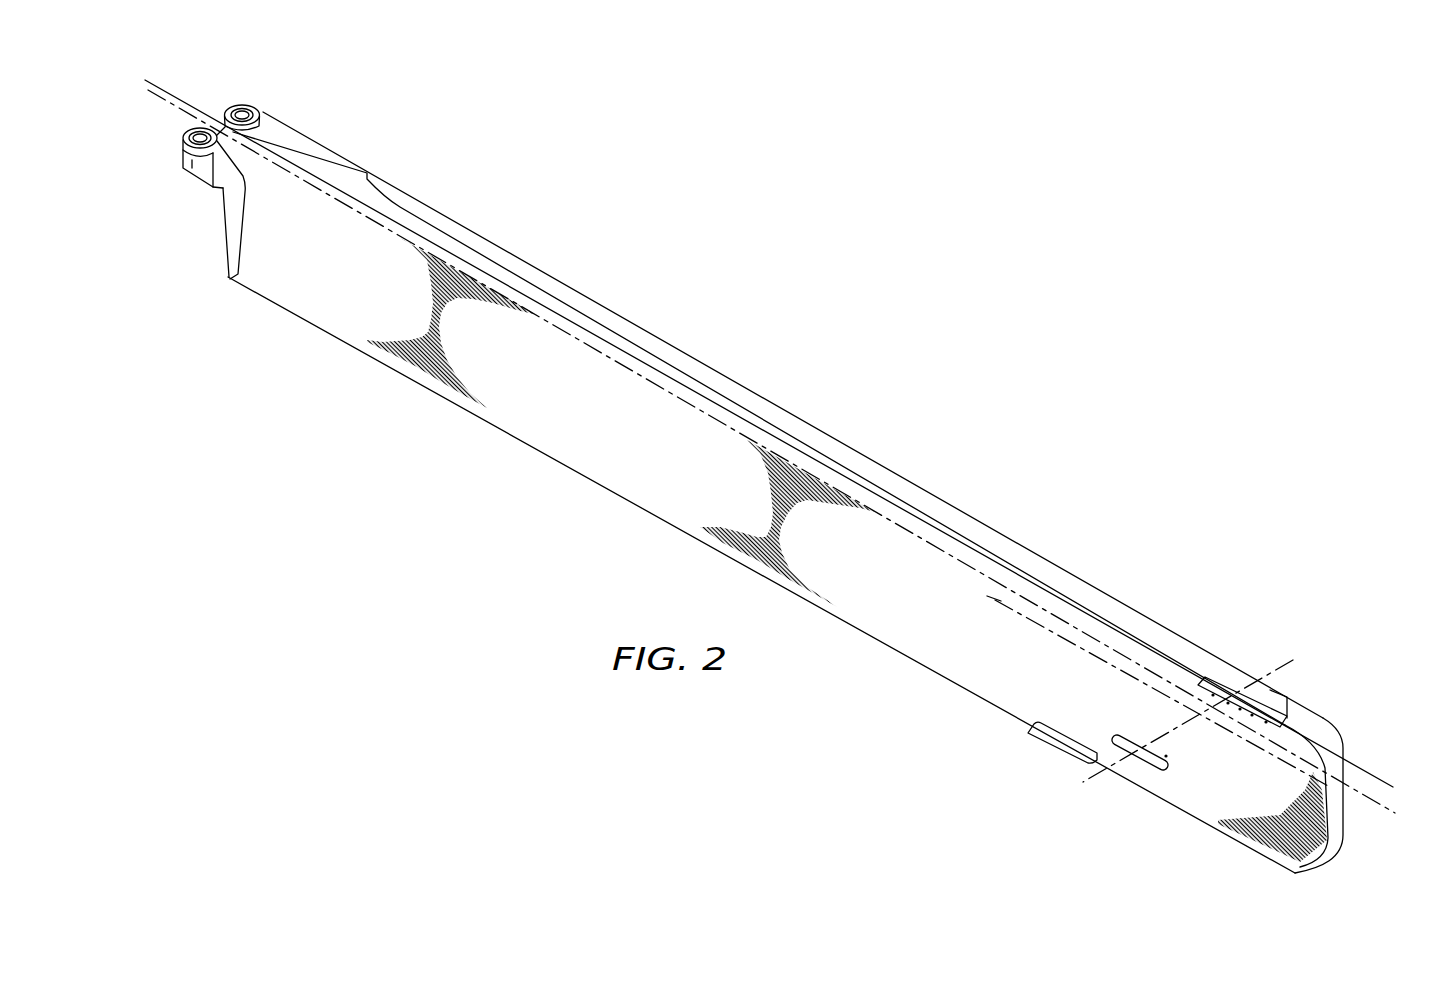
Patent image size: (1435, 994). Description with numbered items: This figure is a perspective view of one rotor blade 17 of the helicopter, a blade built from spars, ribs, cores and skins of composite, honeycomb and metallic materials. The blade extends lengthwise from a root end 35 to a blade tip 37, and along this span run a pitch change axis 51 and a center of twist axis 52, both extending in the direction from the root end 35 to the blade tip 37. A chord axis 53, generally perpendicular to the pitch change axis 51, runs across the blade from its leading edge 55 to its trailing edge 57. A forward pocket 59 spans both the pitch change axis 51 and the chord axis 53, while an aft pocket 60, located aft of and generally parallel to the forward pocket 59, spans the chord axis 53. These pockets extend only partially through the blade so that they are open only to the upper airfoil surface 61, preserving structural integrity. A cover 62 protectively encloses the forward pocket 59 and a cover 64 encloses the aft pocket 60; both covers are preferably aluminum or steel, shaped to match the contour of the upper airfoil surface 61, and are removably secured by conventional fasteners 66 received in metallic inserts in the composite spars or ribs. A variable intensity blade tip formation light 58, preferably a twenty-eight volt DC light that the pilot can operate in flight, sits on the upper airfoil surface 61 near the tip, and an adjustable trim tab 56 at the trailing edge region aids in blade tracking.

The rotor blade 17 is at (773, 473).
The root end 35 is at (270, 101).
The blade tip 37 is at (1250, 863).
The pitch change axis 51 is at (185, 100).
The center of twist axis 52 is at (183, 108).
The chord axis 53 is at (1293, 658).
The leading edge 55 is at (873, 457).
The adjustable trim tab 56 is at (1053, 740).
The trailing edge 57 is at (580, 478).
The variable intensity blade tip formation light 58 is at (1313, 708).
The forward pocket 59 is at (1208, 671).
The aft pocket 60 is at (1177, 763).
The upper airfoil surface 61 is at (993, 598).
The cover 62 is at (1280, 690).
The cover 64 is at (1123, 737).
The fasteners 66 is at (1228, 678).